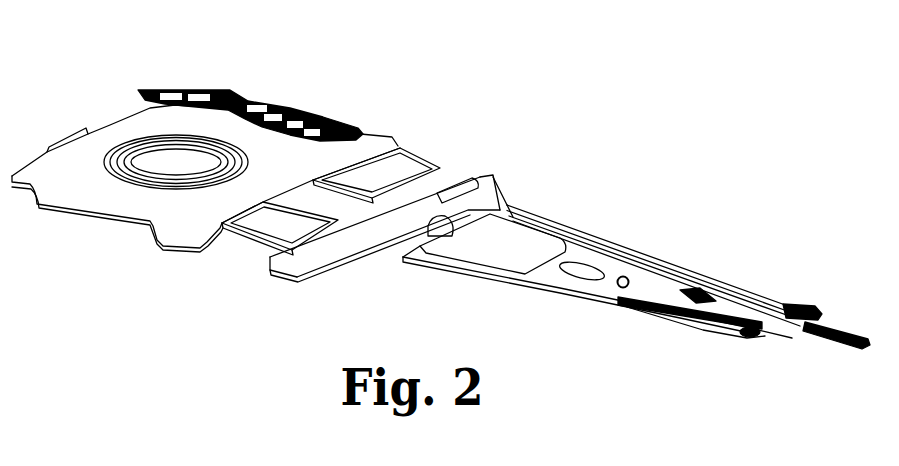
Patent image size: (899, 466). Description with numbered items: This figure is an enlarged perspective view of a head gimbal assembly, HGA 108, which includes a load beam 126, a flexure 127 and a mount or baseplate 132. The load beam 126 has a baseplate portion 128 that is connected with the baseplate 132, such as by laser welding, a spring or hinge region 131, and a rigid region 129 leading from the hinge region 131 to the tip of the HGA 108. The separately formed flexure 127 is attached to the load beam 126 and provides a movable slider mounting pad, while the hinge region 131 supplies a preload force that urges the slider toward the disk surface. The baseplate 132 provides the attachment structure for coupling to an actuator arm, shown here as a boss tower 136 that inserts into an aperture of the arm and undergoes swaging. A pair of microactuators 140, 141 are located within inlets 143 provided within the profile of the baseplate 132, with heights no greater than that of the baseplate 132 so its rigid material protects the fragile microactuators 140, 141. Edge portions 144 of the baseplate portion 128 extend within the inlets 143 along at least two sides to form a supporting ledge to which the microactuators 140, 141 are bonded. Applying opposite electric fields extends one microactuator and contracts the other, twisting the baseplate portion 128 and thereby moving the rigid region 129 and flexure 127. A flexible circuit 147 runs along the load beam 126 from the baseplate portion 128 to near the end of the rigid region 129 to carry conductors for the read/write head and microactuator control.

The head gimbal assembly (HGA) 108 is at (441, 219).
The load beam 126 is at (650, 283).
The flexure 127 is at (672, 323).
The baseplate portion of the load beam 128 is at (355, 258).
The rigid region 129 is at (594, 252).
The spring or hinge region 131 is at (500, 210).
The baseplate 132 is at (372, 137).
The boss tower 136 is at (138, 141).
The microactuator 140 is at (275, 225).
The microactuator 141 is at (397, 186).
The inlets 143 is at (415, 153).
The edge portions 144 is at (205, 251).
The flexible circuit 147 is at (275, 100).